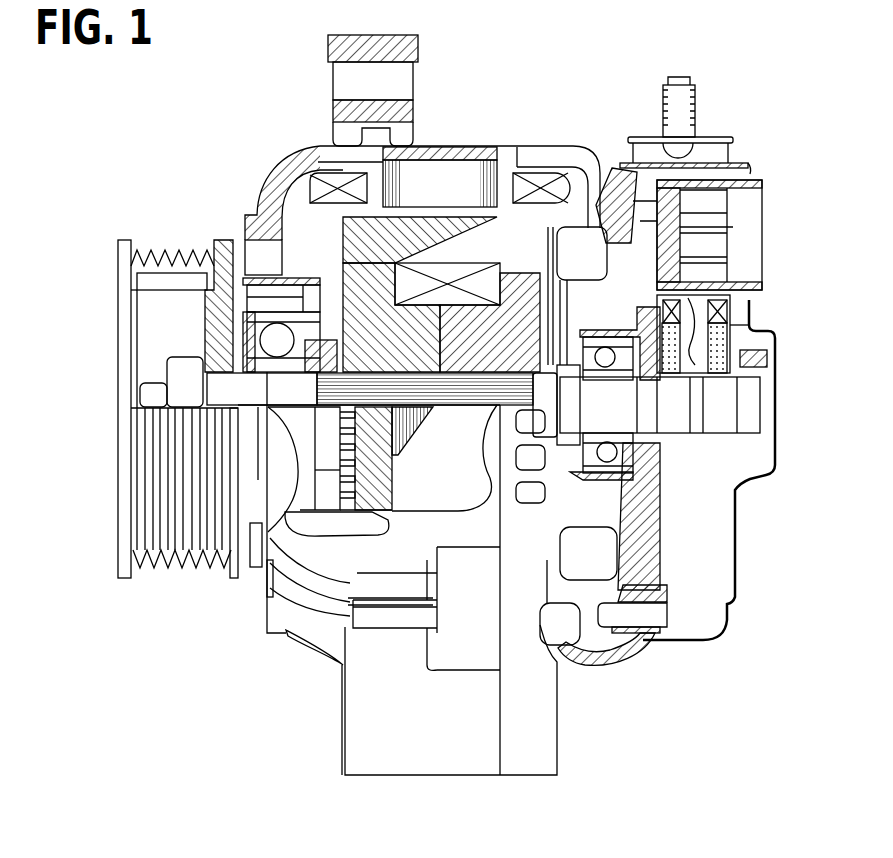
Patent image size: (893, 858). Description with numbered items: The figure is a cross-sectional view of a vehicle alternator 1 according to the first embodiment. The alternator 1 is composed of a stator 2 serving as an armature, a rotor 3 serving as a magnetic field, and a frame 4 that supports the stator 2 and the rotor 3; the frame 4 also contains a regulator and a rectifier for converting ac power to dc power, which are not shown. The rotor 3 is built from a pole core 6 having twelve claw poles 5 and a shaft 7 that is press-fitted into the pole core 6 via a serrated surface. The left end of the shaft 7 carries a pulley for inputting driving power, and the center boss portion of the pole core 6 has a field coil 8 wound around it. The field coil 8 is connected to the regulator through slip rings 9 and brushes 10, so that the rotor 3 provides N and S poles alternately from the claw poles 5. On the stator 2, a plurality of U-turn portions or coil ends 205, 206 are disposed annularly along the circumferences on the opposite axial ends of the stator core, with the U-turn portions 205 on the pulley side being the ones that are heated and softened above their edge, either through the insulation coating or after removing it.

The alternator 1 is at (556, 58).
The stator 2 is at (455, 150).
The rotor 3 is at (397, 240).
The frame 4 is at (315, 157).
The claw poles 5 is at (452, 228).
The pole core 6 is at (480, 330).
The shaft 7 is at (203, 352).
The field coil 8 is at (247, 213).
The slip rings 9 is at (727, 392).
The brushes 10 is at (720, 347).
The U-turn portions 205 is at (322, 156).
The U-turn portions 206 is at (567, 183).